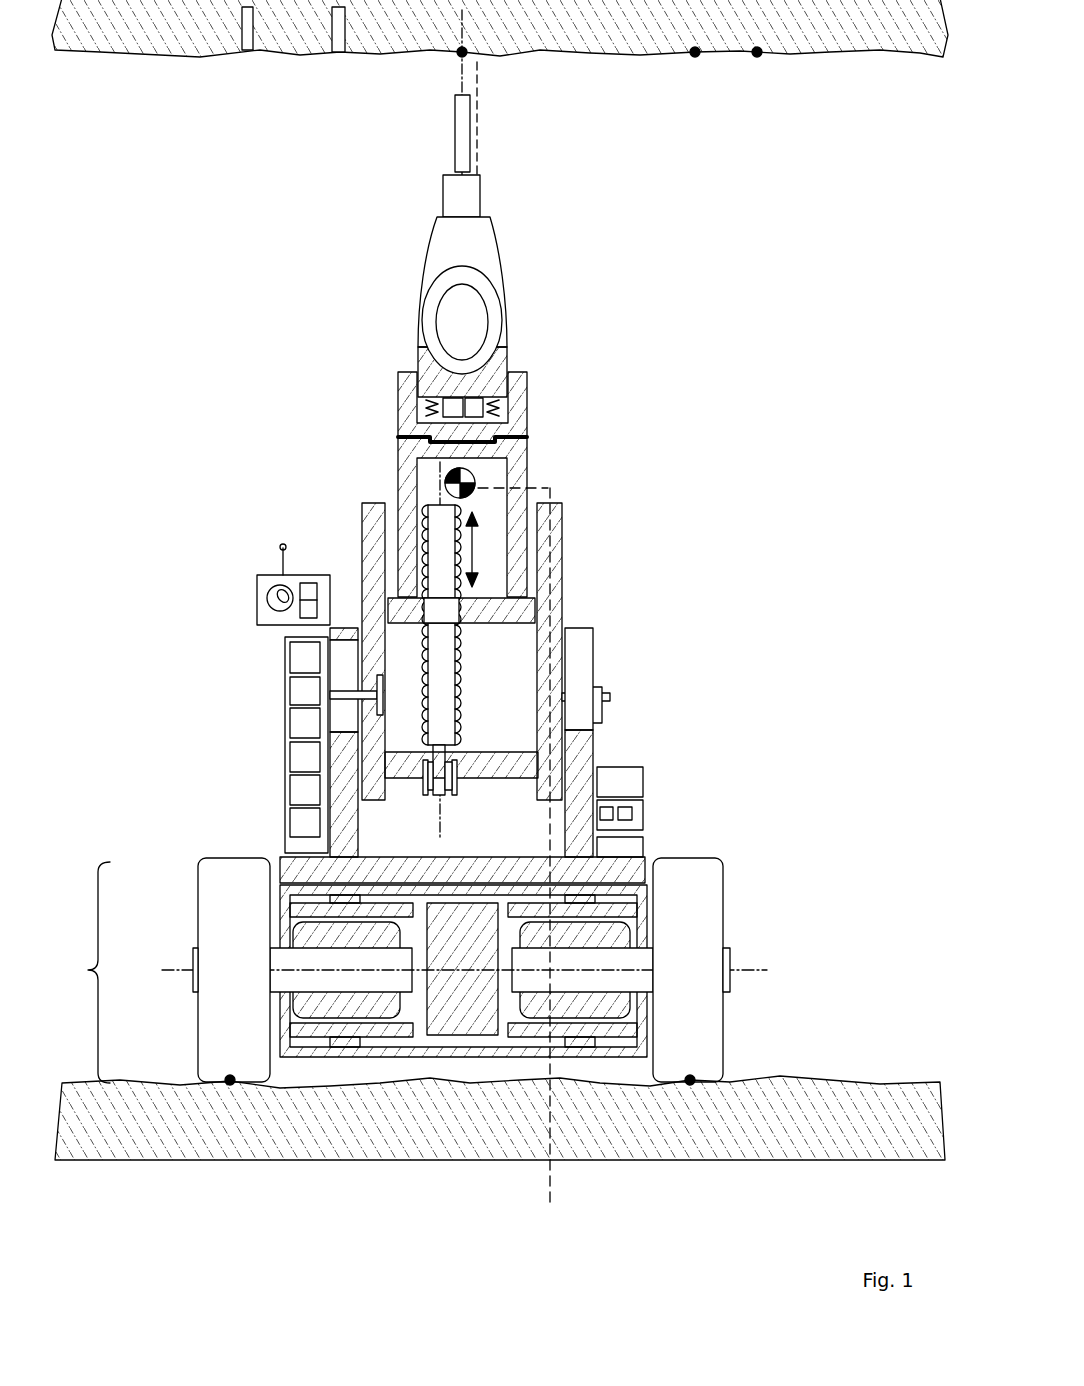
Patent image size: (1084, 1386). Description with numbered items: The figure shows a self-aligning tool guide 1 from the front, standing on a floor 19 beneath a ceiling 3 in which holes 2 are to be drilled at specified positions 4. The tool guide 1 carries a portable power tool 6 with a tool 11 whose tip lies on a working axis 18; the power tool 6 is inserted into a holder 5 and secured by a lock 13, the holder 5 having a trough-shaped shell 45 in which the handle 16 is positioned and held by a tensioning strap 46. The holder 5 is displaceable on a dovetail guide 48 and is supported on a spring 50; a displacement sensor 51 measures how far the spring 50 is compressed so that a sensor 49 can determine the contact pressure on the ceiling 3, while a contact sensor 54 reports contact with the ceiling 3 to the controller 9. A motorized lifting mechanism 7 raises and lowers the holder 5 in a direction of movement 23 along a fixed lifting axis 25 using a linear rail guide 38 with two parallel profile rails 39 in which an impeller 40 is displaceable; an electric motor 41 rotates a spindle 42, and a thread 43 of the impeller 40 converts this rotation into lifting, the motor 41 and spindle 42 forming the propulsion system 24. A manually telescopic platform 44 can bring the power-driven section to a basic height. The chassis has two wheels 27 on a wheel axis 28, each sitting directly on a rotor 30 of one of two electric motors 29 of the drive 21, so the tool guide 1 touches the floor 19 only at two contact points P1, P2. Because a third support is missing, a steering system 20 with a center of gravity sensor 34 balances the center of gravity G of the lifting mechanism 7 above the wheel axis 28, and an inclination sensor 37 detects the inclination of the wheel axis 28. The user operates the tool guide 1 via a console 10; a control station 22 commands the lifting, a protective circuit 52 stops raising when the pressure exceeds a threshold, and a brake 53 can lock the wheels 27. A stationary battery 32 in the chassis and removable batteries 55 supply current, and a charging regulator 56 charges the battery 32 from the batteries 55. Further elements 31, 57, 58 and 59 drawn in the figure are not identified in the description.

The self-aligning tool guide 1 is at (231, 254).
The holes 2 is at (247, 42).
The ceiling 3 is at (280, 55).
The specified position 4 is at (695, 52).
The holder 5 is at (110, 337).
The portable power tool 6 is at (110, 82).
The motorized lifting mechanism 7 is at (110, 468).
The controller 9 is at (248, 645).
The console 10 is at (268, 592).
The tool 11 is at (462, 135).
The lock 13 is at (348, 290).
The handle 16 is at (470, 326).
The working axis 18 is at (462, 75).
The floor 19 is at (878, 1083).
The steering system 20 is at (303, 660).
The drive 21 is at (423, 1248).
The control station 22 is at (303, 723).
The direction of movement 23 is at (475, 536).
The propulsion system 24 is at (647, 630).
The lifting axis 25 is at (432, 487).
The wheels 27 is at (235, 1003).
The wheel axis 28 is at (747, 970).
The electric motors 29 is at (395, 1003).
The rotor 30 is at (590, 980).
The stator 31 is at (605, 908).
The stationary battery 32 is at (470, 985).
The center of gravity sensor 34 is at (303, 691).
The inclination sensor 37 is at (303, 755).
The linear rail guide 38 is at (644, 535).
The profile rails 39 is at (555, 565).
The impeller 40 is at (520, 613).
The electric motor 41 is at (447, 780).
The spindle 42 is at (443, 700).
The thread 43 is at (462, 615).
The manually telescopic platform 44 is at (575, 755).
The trough-shaped shell 45 is at (427, 355).
The tensioning strap 46 is at (427, 323).
The dovetail guide 48 is at (505, 437).
The sensor 49 is at (604, 325).
The spring 50 is at (490, 407).
The displacement sensor 51 is at (475, 413).
The protective circuit 52 is at (303, 787).
The brake 53 is at (303, 820).
The contact sensor 54 is at (447, 410).
The removable batteries 55 is at (635, 785).
The charging regulator 56 is at (635, 850).
The sensor unit 57 is at (694, 760).
The sensor element 58 is at (625, 810).
The sensor element 59 is at (620, 815).
The center of gravity G is at (470, 478).
The contact point P1 is at (230, 1080).
The contact point P2 is at (690, 1080).